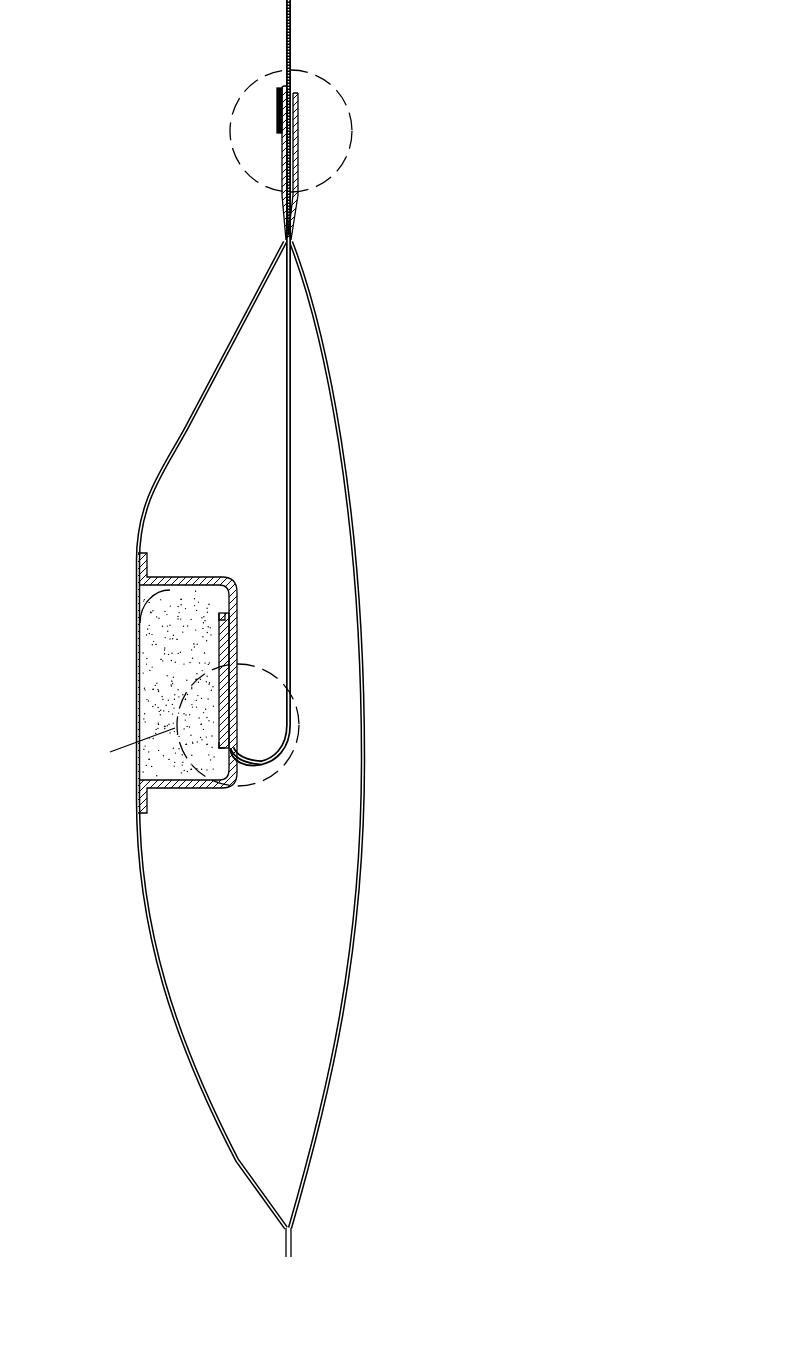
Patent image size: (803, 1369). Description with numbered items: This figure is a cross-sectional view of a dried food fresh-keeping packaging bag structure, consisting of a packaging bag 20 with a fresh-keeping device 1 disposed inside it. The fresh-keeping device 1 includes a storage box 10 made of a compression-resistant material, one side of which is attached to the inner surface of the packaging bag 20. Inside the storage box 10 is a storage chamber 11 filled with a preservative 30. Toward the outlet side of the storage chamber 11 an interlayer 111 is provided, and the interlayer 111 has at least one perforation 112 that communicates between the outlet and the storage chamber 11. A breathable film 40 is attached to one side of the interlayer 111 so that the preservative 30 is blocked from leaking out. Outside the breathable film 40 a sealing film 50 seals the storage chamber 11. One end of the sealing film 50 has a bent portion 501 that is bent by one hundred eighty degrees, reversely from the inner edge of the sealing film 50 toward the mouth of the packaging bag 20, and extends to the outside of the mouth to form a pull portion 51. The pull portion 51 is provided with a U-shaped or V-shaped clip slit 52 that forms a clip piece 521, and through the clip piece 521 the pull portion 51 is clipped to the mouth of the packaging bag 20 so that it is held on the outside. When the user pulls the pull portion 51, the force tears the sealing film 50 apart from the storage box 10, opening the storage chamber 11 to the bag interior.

The fresh-keeping device 1 is at (469, 61).
The storage box 10 is at (197, 583).
The storage chamber 11 is at (140, 623).
The interlayer 111 is at (223, 627).
The perforation 112 is at (232, 682).
The packaging bag 20 is at (337, 417).
The preservative 30 is at (178, 665).
The breathable film 40 is at (231, 643).
The sealing film 50 is at (235, 725).
The bent portion 501 is at (255, 790).
The pull portion 51 is at (288, 20).
The clip slit 52 is at (290, 118).
The clip piece 521 is at (285, 115).